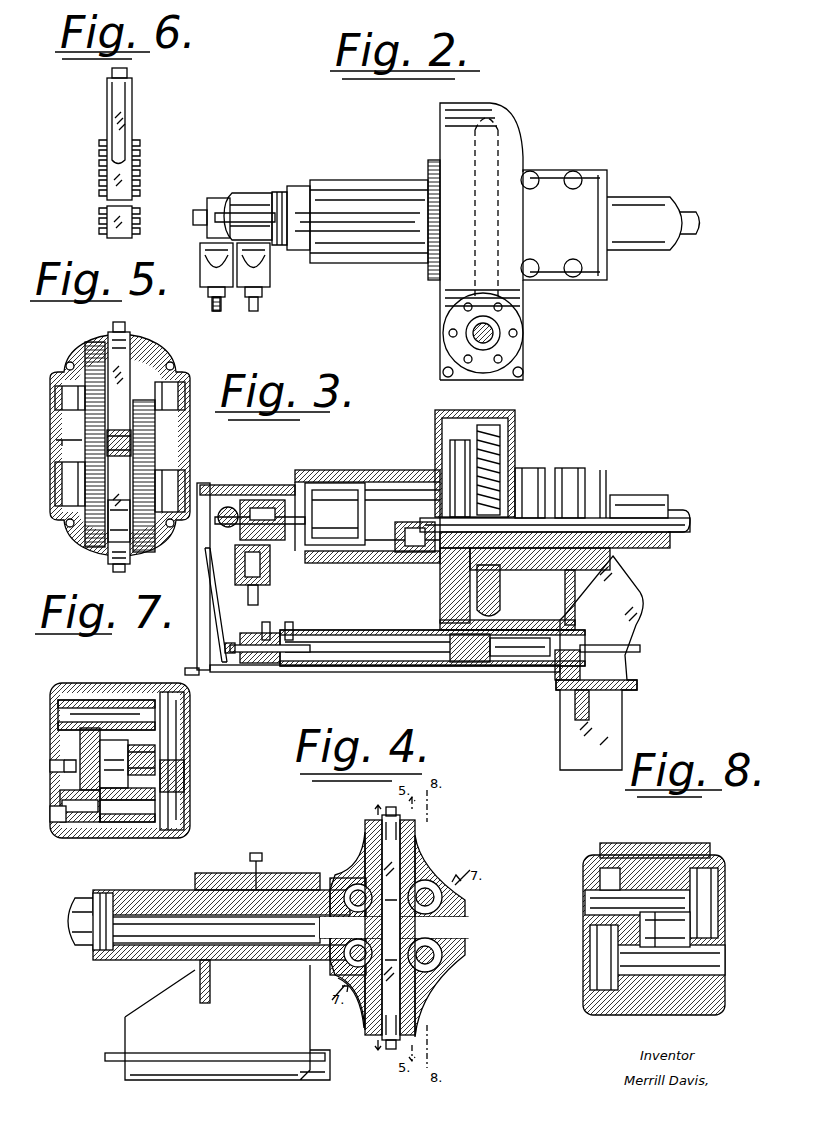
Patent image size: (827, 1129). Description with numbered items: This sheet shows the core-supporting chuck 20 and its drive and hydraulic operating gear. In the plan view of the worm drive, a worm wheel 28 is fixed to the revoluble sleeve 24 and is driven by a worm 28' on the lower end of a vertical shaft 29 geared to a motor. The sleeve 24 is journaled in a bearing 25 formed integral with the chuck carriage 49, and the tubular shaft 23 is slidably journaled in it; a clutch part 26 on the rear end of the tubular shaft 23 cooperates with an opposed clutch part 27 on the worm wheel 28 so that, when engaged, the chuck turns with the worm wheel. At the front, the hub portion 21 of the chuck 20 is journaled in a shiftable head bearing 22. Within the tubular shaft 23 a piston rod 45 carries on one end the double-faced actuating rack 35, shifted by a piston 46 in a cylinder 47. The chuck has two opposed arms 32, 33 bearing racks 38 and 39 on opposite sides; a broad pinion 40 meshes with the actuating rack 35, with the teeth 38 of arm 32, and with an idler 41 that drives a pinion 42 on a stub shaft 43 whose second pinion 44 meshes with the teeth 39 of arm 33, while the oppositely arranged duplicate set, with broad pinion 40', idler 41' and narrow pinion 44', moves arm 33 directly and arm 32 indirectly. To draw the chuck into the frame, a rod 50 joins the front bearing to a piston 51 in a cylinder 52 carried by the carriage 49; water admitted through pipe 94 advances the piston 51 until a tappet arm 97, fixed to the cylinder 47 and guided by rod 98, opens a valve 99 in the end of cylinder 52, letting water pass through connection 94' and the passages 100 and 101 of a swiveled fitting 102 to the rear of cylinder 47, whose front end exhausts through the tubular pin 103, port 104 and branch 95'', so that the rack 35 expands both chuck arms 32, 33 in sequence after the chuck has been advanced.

In FIG. 5, the chuck 20 is at (176, 362).
In FIG. 7, the chuck 20 is at (197, 713).
In FIG. 4, the chuck 20 is at (471, 959).
In FIG. 8, the chuck 20 is at (643, 841).
In FIG. 4, the hub portion 21 is at (165, 958).
In FIG. 4, the head bearing 22 is at (222, 1080).
In FIG. 2, the tubular shaft 23 is at (645, 200).
In FIG. 3, the tubular shaft 23 is at (628, 494).
In FIG. 4, the tubular shaft 23 is at (76, 936).
In FIG. 2, the sleeve 24 is at (606, 255).
In FIG. 3, the sleeve 24 is at (612, 548).
In FIG. 3, the bearing 25 is at (560, 566).
In FIG. 3, the clutch part 26 is at (457, 580).
In FIG. 3, the clutch part 27 is at (495, 578).
In FIG. 2, the worm wheel 28 is at (491, 241).
In FIG. 3, the worm wheel 28 is at (495, 463).
In FIG. 2, the worm 28' is at (510, 335).
In FIG. 2, the vertical shaft 29 is at (492, 330).
In FIG. 6, the chuck arm 32 is at (122, 105).
In FIG. 5, the chuck arm 32 is at (155, 380).
In FIG. 7, the chuck arm 32 is at (102, 768).
In FIG. 4, the chuck arm 32 is at (385, 842).
In FIG. 5, the chuck arm 33 is at (118, 520).
In FIG. 7, the chuck arm 33 is at (186, 752).
In FIG. 4, the chuck arm 33 is at (405, 1012).
In FIG. 5, the actuating rack 35 is at (118, 430).
In FIG. 7, the actuating rack 35 is at (132, 776).
In FIG. 4, the actuating rack 35 is at (470, 928).
In FIG. 8, the actuating rack 35 is at (690, 927).
In FIG. 6, the rack 38 is at (104, 171).
In FIG. 5, the rack 38 is at (142, 552).
In FIG. 7, the rack 38 is at (90, 740).
In FIG. 5, the rack 39 is at (96, 342).
In FIG. 7, the rack 39 is at (150, 794).
In FIG. 7, the broad pinion 40 is at (106, 694).
In FIG. 4, the broad pinion 40 is at (457, 898).
In FIG. 8, the broad pinion 40 is at (619, 891).
In FIG. 4, the broad pinion 40' is at (456, 967).
In FIG. 8, the broad pinion 40' is at (688, 962).
In FIG. 5, the idler 41 is at (186, 447).
In FIG. 7, the idler 41 is at (50, 750).
In FIG. 4, the idler 41 is at (438, 878).
In FIG. 5, the idler 41' is at (56, 446).
In FIG. 7, the idler 41' is at (195, 776).
In FIG. 7, the pinion 42 is at (54, 818).
In FIG. 4, the pinion 42 is at (352, 1000).
In FIG. 7, the stub shaft 43 is at (82, 826).
In FIG. 4, the stub shaft 43 is at (345, 960).
In FIG. 7, the second pinion 44 is at (127, 833).
In FIG. 4, the narrow pinion 44' is at (346, 878).
In FIG. 2, the piston rod 45 is at (700, 226).
In FIG. 3, the piston rod 45 is at (692, 526).
In FIG. 4, the piston rod 45 is at (135, 945).
In FIG. 3, the piston 46 is at (410, 554).
In FIG. 2, the cylinder 47 is at (388, 262).
In FIG. 3, the cylinder 47 is at (370, 565).
In FIG. 3, the chuck carriage 49 is at (625, 690).
In FIG. 3, the rod 50 is at (600, 652).
In FIG. 4, the rod 50 is at (112, 1062).
In FIG. 3, the piston 51 is at (465, 665).
In FIG. 3, the cylinder 52 is at (420, 668).
In FIG. 3, the pipe 94 is at (292, 621).
In FIG. 2, the connection 94' is at (246, 277).
In FIG. 3, the connection 94' is at (266, 575).
In FIG. 2, the branch 95'' is at (235, 313).
In FIG. 3, the tappet arm 97 is at (212, 610).
In FIG. 3, the rod 98 is at (318, 673).
In FIG. 3, the valve 99 is at (233, 642).
In FIG. 2, the passage 100 is at (355, 218).
In FIG. 3, the passage 100 is at (345, 475).
In FIG. 3, the passage 101 is at (262, 500).
In FIG. 2, the swiveled fitting 102 is at (250, 200).
In FIG. 3, the swiveled fitting 102 is at (232, 506).
In FIG. 3, the tubular pin 103 is at (318, 512).
In FIG. 2, the port 104 is at (210, 258).
In FIG. 3, the port 104 is at (205, 548).